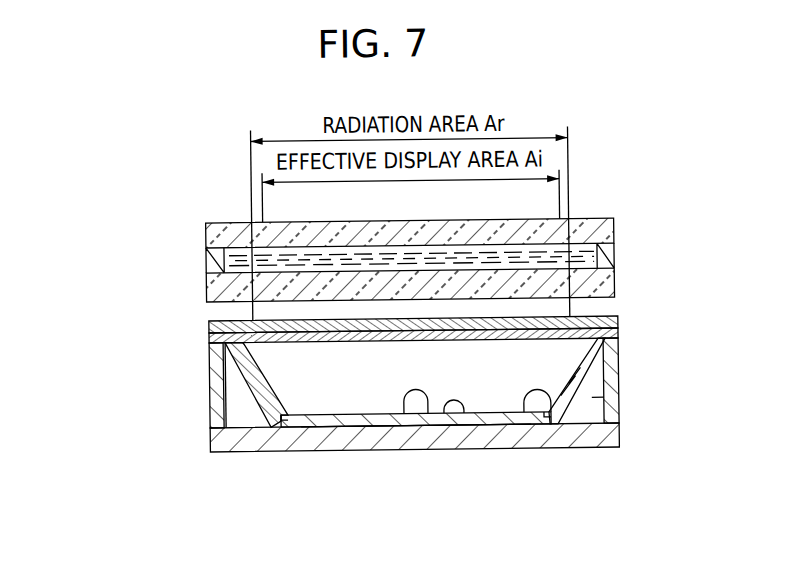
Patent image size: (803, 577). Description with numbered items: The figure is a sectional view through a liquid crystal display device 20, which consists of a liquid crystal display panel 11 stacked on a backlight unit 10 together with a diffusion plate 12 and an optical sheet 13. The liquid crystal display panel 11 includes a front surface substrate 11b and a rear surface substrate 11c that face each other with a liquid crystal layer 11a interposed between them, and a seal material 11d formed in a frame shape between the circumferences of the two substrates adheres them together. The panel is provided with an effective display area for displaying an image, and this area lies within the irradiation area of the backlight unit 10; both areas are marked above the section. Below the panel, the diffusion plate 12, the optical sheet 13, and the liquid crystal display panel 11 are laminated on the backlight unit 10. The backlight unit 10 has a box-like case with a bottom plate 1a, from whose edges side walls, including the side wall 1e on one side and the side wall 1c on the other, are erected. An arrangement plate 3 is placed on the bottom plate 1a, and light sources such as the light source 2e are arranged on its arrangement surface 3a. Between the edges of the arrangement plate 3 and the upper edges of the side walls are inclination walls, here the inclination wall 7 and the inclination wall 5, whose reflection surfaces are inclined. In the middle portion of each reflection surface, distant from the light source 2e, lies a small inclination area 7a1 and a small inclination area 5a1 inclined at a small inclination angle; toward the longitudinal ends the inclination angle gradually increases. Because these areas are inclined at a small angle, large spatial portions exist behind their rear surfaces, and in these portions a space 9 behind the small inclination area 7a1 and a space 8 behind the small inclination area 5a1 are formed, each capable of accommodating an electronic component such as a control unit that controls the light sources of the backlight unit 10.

The liquid crystal display device 20 is at (399, 346).
The liquid crystal display panel 11 is at (475, 235).
The liquid crystal layer 11a is at (588, 255).
The front surface substrate 11b is at (611, 238).
The seal material 11d is at (609, 265).
The rear surface substrate 11c is at (451, 284).
The optical sheet 13 is at (615, 328).
The diffusion plate 12 is at (615, 345).
The backlight unit 10 is at (401, 415).
The side wall 1e is at (208, 352).
The side wall 1c is at (612, 380).
The bottom plate 1a is at (382, 445).
The space 9 is at (243, 417).
The space 8 is at (603, 402).
The inclination wall 7 is at (277, 392).
The small inclination area 7a1 is at (265, 411).
The arrangement plate 3 is at (336, 424).
The arrangement surface 3a is at (459, 428).
The inclination wall 5 is at (550, 407).
The small inclination area 5a1 is at (532, 418).
The light source 2e is at (416, 400).